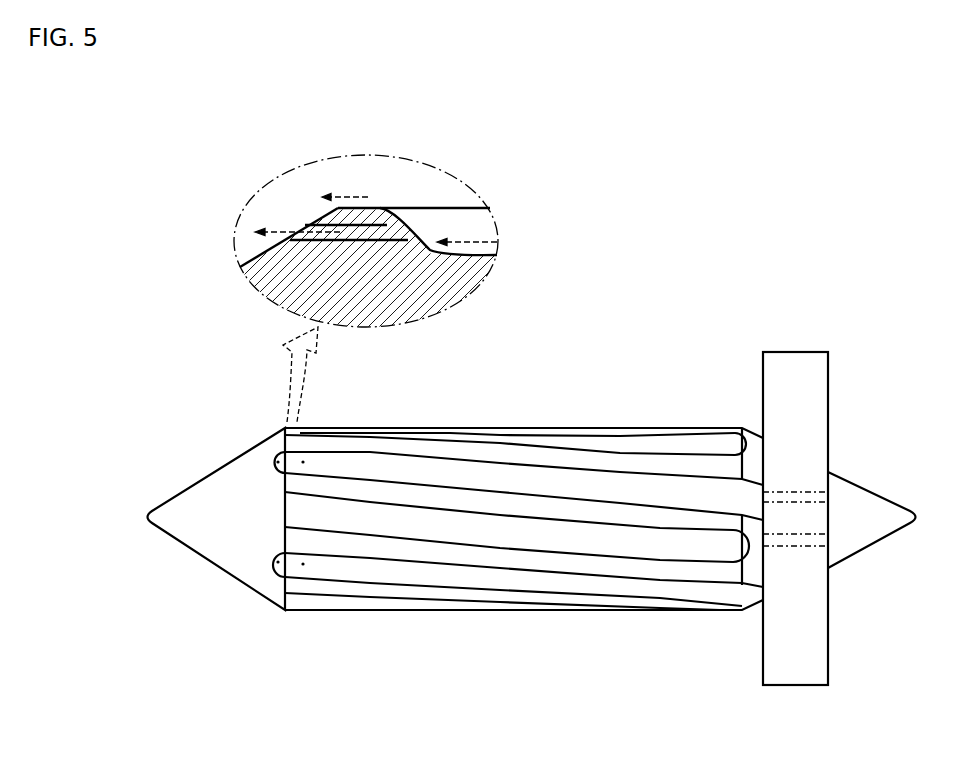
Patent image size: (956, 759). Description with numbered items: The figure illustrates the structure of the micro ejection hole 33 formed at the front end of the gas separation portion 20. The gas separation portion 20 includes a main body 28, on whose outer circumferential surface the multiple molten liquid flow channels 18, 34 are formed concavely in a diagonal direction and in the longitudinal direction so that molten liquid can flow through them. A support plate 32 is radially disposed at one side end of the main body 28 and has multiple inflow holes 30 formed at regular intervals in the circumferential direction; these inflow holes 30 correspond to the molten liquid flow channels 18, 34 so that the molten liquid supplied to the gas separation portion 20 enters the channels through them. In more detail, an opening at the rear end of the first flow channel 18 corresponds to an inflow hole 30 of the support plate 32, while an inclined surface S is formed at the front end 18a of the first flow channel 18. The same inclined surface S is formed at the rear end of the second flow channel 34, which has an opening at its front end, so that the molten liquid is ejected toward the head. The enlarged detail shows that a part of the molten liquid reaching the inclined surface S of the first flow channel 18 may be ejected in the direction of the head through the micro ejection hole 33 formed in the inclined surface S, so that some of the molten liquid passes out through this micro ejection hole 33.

The first flow channel 18 is at (363, 467).
The front end of the first flow channel 18a is at (337, 207).
The micro ejection hole 33 is at (372, 227).
The main body 28 is at (455, 298).
The inclined surface S is at (405, 248).
The support plate 32 is at (807, 358).
The inflow hole 30 is at (790, 497).
The second flow channel 34 is at (473, 525).
The gas separation portion 20 is at (615, 612).